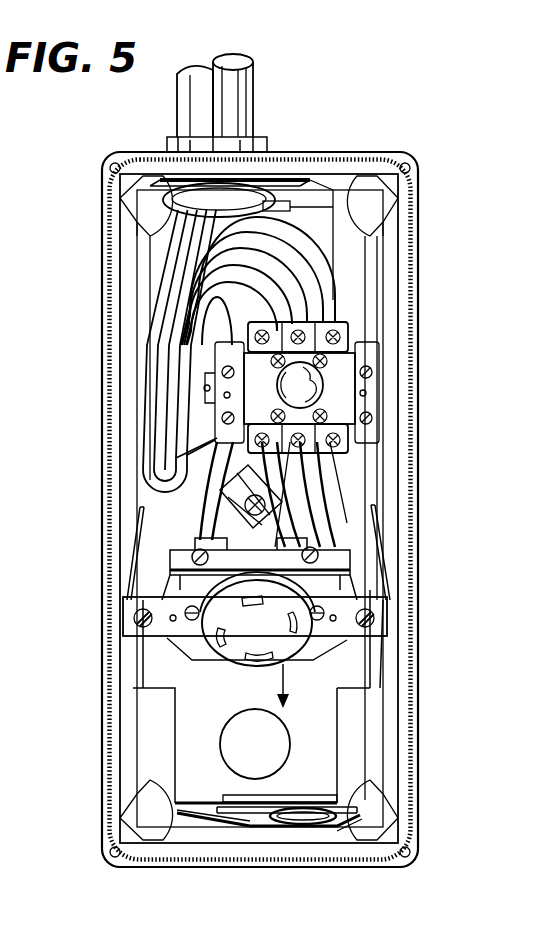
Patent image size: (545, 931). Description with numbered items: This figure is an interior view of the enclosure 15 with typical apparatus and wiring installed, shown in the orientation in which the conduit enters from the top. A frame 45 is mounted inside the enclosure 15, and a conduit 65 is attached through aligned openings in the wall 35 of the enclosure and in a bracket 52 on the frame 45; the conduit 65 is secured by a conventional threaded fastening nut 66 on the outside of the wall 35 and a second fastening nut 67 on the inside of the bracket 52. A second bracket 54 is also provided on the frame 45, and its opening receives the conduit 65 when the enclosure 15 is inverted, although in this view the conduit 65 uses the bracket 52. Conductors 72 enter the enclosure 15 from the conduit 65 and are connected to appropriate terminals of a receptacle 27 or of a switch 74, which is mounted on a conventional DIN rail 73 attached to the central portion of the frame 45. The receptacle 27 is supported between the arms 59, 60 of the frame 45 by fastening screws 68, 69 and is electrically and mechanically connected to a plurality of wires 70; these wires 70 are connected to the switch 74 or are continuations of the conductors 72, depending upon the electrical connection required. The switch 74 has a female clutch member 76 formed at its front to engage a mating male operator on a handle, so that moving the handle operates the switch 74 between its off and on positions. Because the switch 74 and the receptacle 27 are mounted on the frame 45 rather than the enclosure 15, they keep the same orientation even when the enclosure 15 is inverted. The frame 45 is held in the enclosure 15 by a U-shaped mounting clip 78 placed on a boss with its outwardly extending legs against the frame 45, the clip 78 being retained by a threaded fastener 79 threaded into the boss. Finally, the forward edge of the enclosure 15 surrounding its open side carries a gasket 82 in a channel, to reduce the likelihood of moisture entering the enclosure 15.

The enclosure 15 is at (424, 193).
The receptacle 27 is at (227, 666).
The wall 35 is at (298, 186).
The frame 45 is at (337, 730).
The bracket 52 is at (335, 195).
The bracket 54 is at (254, 833).
The arm 59 is at (134, 568).
The arm 60 is at (387, 537).
The conduit 65 is at (255, 95).
The fastening nut 66 is at (266, 150).
The fastening nut 67 is at (163, 192).
The fastening screw 68 is at (137, 620).
The fastening screw 69 is at (372, 614).
The wires 70 is at (435, 462).
The conductors 72 is at (156, 264).
The DIN rail 73 is at (203, 337).
The switch 74 is at (350, 340).
The female clutch member 76 is at (322, 385).
The U-shaped mounting clip 78 is at (220, 490).
The threaded fastener 79 is at (235, 522).
The gasket 82 is at (420, 786).